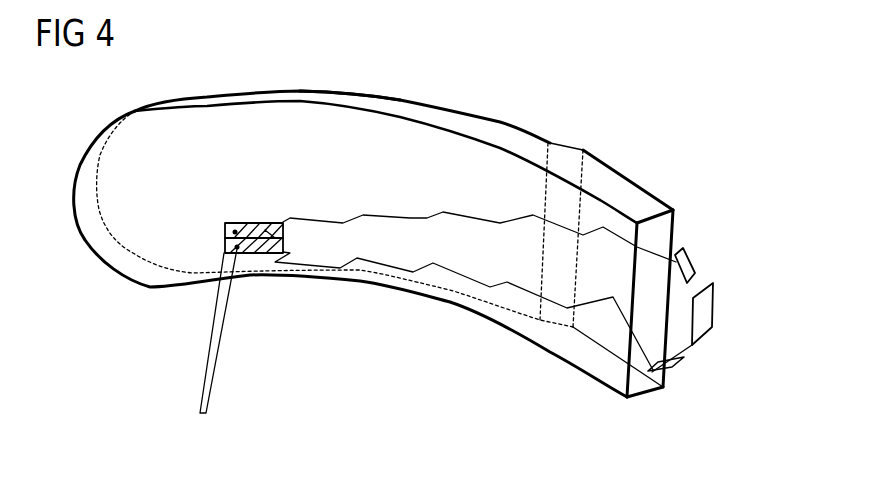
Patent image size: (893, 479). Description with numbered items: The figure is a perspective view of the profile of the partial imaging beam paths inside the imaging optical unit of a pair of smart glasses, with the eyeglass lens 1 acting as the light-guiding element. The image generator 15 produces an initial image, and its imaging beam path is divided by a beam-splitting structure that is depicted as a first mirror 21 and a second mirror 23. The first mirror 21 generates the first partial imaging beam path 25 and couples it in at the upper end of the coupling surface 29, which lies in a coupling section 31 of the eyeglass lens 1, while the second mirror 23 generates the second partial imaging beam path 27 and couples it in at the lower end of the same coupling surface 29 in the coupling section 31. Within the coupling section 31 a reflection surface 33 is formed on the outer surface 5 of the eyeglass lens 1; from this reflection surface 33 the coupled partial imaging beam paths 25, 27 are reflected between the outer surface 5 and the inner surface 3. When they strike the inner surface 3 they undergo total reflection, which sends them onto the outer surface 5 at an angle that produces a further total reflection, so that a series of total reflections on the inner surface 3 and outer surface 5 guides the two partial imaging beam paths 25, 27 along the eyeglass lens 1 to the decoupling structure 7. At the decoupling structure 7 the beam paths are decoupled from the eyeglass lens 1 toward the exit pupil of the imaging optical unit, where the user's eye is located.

The eyeglass lens 1 is at (262, 95).
The inner surface 3 is at (208, 115).
The outer surface 5 is at (320, 90).
The decoupling structure 7 is at (260, 208).
The image generator 15 is at (705, 313).
The first mirror 21 is at (687, 262).
The second mirror 23 is at (683, 360).
The first partial imaging beam path 25 is at (473, 217).
The second partial imaging beam path 27 is at (452, 270).
The coupling surface 29 is at (658, 230).
The coupling section 31 is at (587, 121).
The reflection surface 33 is at (640, 183).